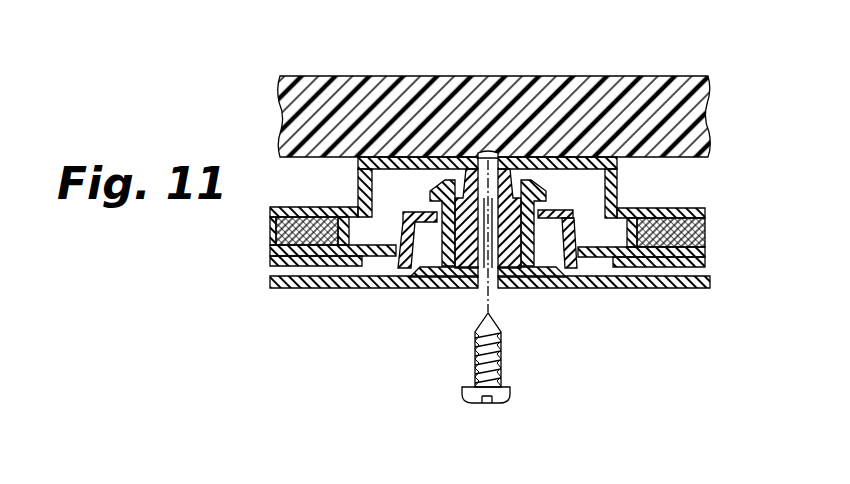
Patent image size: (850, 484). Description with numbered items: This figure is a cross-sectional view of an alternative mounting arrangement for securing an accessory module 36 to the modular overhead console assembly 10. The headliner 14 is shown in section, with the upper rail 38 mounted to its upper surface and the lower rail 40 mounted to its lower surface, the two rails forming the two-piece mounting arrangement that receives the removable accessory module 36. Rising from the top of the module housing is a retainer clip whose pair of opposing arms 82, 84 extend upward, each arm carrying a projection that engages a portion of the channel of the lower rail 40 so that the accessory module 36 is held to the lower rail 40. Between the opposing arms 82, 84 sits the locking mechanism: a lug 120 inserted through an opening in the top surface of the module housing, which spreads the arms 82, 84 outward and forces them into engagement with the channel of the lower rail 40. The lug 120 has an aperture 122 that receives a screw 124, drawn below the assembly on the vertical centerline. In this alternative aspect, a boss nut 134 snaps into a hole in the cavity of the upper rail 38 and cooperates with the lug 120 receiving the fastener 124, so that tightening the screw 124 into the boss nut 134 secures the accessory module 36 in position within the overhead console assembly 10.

The overhead console assembly 10 is at (742, 88).
The headliner 14 is at (705, 232).
The accessory module 36 is at (332, 288).
The upper rail 38 is at (595, 157).
The lower rail 40 is at (383, 256).
The opposing arm 82 is at (440, 193).
The opposing arm 84 is at (533, 172).
The lug 120 is at (478, 270).
The aperture 122 is at (503, 268).
The screw 124 is at (501, 352).
The boss nut 134 is at (466, 152).